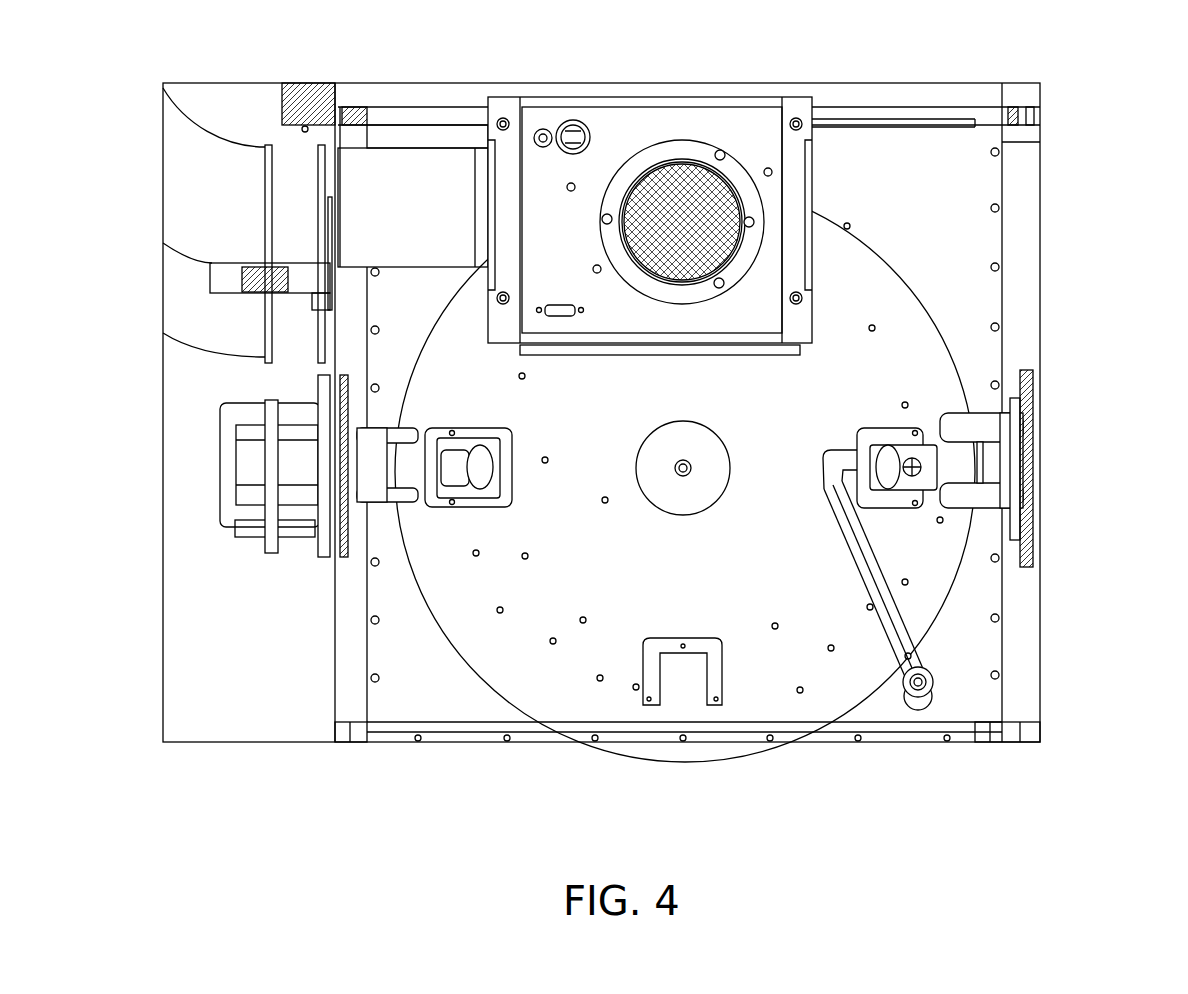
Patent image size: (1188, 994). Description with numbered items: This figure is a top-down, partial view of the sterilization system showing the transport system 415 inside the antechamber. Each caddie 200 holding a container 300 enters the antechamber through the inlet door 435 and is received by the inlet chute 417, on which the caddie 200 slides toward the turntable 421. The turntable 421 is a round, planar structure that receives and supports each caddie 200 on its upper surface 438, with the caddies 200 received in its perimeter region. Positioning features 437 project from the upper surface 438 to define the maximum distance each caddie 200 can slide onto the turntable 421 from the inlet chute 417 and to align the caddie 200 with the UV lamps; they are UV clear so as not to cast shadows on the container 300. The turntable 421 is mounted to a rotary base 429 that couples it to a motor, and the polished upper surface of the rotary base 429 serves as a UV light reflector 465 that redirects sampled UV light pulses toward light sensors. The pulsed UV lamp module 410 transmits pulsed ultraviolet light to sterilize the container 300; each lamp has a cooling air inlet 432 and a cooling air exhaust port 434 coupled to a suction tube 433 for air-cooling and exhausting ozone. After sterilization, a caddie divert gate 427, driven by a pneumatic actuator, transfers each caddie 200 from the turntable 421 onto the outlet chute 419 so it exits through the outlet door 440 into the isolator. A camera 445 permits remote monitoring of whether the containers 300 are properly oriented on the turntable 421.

The caddie 200 is at (437, 435).
The container 300 is at (478, 445).
The pulsed UV lamp module 410 is at (769, 133).
The transport system 415 is at (1025, 800).
The inlet chute 417 is at (387, 514).
The outlet chute 419 is at (1000, 466).
The turntable 421 is at (742, 572).
The caddie divert gate 427 is at (897, 637).
The rotary base 429 is at (716, 416).
The cooling air inlet 432 is at (683, 162).
The suction tube 433 is at (213, 183).
The cooling air exhaust port 434 is at (410, 178).
The inlet door 435 is at (248, 469).
The positioning feature 437 is at (519, 491).
The upper surface 438 is at (880, 277).
The outlet door 440 is at (1038, 422).
The camera 445 is at (198, 288).
The UV light reflector 465 is at (660, 452).